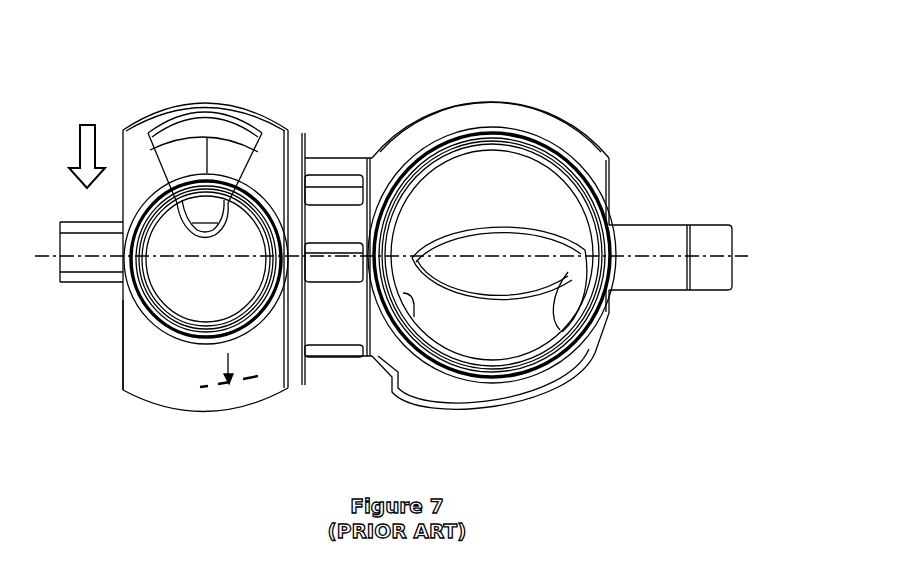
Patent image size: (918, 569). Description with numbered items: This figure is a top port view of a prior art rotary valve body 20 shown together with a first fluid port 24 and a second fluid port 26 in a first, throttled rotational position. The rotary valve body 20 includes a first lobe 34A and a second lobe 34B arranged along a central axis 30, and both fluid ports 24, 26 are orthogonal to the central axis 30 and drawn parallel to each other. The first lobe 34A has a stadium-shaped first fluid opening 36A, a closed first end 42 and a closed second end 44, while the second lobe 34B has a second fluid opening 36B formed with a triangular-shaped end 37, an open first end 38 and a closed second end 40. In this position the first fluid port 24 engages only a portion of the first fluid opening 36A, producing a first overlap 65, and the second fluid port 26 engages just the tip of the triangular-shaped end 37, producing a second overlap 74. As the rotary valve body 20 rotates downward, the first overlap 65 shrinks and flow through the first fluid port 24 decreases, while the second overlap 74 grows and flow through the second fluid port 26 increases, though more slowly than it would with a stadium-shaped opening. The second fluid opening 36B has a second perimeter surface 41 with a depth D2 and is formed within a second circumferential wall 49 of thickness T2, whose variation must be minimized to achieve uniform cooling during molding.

The rotary valve body 20 is at (416, 116).
The first fluid port 24 is at (540, 140).
The second fluid port 26 is at (160, 333).
The central axis 30 is at (738, 254).
The first lobe 34A is at (487, 103).
The second lobe 34B is at (155, 405).
The first fluid opening 36A is at (552, 247).
The second fluid opening 36B is at (257, 128).
The triangular-shaped end 37 is at (158, 168).
The open first end 38 is at (123, 138).
The closed second end 40 is at (289, 130).
The second perimeter surface 41 is at (195, 127).
The closed first end 42 is at (608, 170).
The closed second end 44 is at (378, 357).
The second circumferential wall 49 is at (237, 416).
The thickness T2 is at (228, 368).
The depth D2 is at (220, 165).
The first overlap 65 is at (493, 277).
The second overlap 74 is at (208, 213).